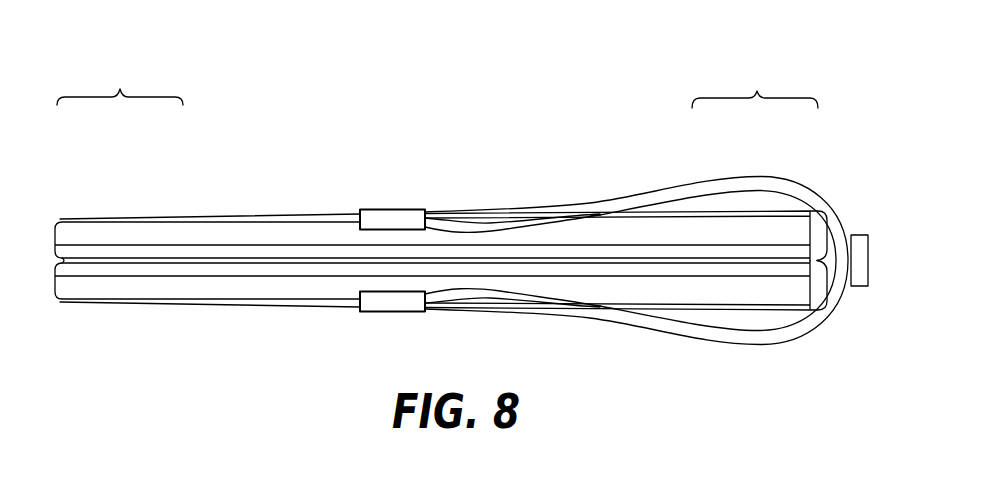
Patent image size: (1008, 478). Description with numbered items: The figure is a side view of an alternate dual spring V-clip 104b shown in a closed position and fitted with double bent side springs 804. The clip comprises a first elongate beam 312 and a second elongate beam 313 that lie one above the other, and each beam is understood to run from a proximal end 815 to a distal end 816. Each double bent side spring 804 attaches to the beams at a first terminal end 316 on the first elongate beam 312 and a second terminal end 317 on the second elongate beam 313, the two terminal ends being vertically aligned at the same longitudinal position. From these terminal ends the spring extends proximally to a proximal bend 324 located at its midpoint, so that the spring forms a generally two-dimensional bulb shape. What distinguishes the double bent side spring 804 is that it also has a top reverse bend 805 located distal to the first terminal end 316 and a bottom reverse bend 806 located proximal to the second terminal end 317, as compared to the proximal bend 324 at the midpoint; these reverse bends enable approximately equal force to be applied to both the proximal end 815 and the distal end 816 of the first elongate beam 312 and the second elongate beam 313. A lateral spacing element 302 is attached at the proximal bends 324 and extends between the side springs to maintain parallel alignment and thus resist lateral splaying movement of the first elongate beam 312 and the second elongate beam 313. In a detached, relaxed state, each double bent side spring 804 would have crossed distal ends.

The proximal end 815 is at (120, 83).
The distal end 816 is at (755, 85).
The alternate dual spring V-clip 104b is at (292, 198).
The first elongate beam 312 is at (130, 236).
The second elongate beam 313 is at (132, 287).
The first terminal end 316 is at (403, 210).
The second terminal end 317 is at (386, 304).
The top reverse bend 805 is at (477, 222).
The bottom reverse bend 806 is at (482, 289).
The proximal bend 324 is at (847, 212).
The double bent side spring 804 is at (792, 340).
The lateral spacing element 302 is at (866, 234).